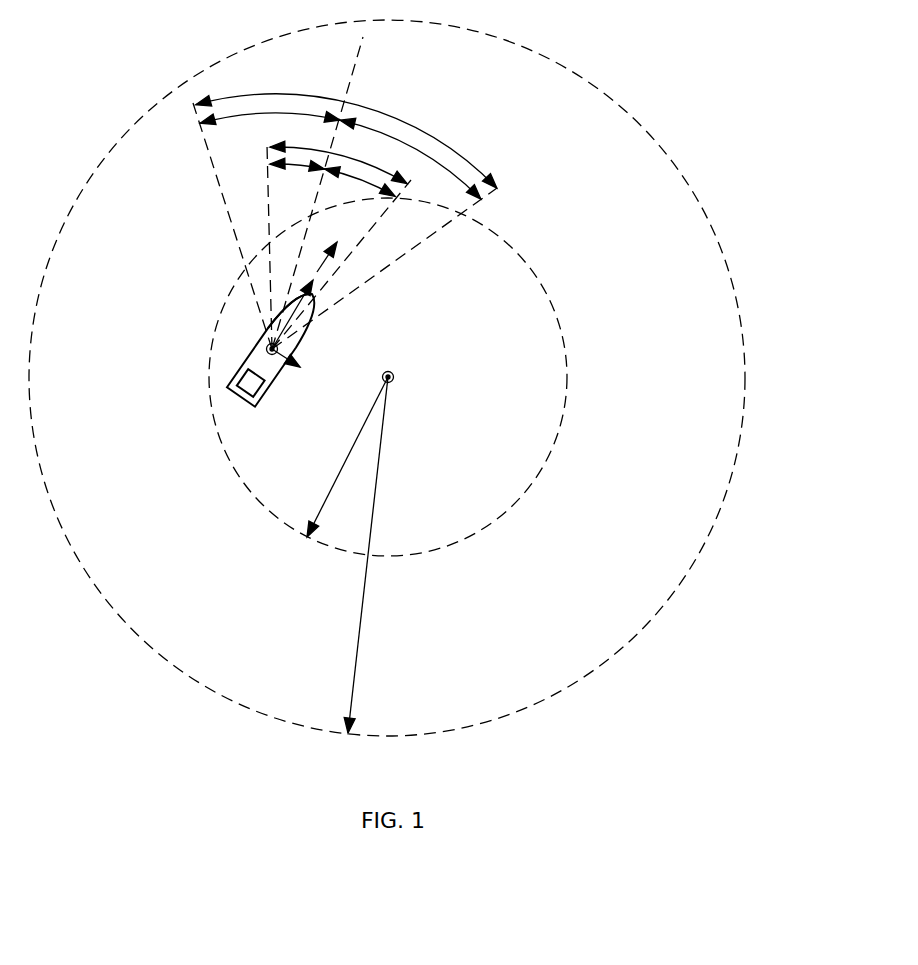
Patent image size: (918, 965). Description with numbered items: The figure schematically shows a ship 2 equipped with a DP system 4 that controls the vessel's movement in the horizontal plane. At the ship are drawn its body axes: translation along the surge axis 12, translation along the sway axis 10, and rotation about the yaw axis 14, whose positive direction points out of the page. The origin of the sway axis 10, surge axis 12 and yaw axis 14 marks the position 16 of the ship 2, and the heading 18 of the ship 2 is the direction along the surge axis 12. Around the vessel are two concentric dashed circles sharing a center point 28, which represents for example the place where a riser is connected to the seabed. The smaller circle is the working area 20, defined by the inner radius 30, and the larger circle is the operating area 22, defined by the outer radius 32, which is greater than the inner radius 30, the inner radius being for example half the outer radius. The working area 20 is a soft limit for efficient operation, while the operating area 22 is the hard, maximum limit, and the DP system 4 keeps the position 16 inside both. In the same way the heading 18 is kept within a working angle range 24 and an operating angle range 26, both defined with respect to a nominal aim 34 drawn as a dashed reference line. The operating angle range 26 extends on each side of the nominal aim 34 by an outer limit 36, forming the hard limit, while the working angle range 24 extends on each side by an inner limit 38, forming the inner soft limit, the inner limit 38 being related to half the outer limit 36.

The ship 2 is at (224, 372).
The DP system 4 is at (240, 410).
The sway axis 10 is at (290, 365).
The surge axis 12 is at (308, 316).
The yaw axis 14 is at (262, 350).
The position 16 is at (265, 344).
The heading 18 is at (334, 263).
The working area 20 is at (464, 368).
The operating area 22 is at (644, 419).
The working angle range 24 is at (388, 173).
The operating angle range 26 is at (450, 150).
The center point 28 is at (394, 382).
The inner radius 30 is at (353, 446).
The outer radius 32 is at (360, 633).
The nominal aim 34 is at (365, 42).
The outer limit 36 is at (232, 118).
The inner limit 38 is at (293, 167).